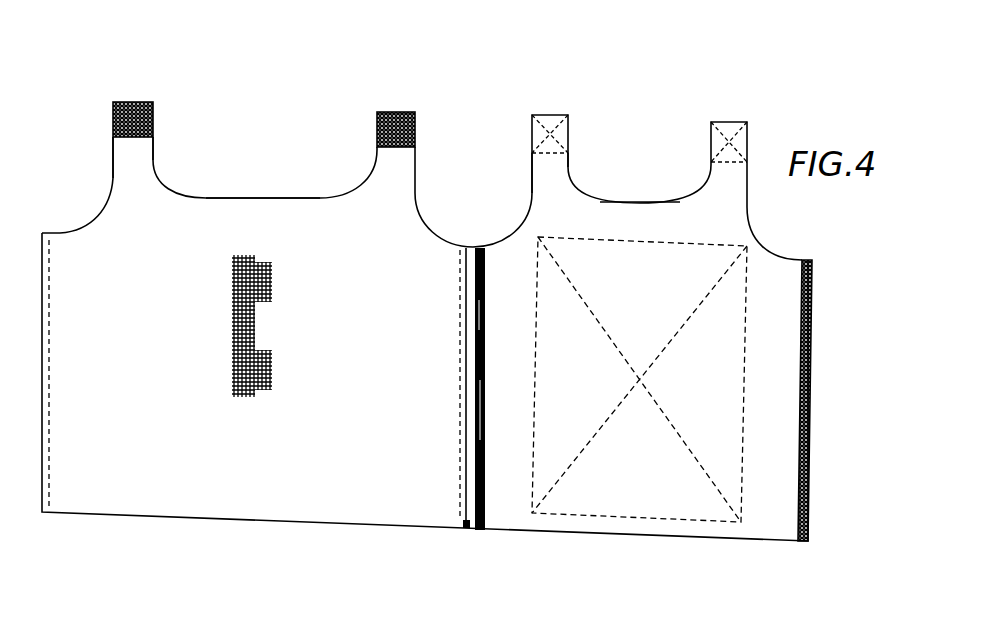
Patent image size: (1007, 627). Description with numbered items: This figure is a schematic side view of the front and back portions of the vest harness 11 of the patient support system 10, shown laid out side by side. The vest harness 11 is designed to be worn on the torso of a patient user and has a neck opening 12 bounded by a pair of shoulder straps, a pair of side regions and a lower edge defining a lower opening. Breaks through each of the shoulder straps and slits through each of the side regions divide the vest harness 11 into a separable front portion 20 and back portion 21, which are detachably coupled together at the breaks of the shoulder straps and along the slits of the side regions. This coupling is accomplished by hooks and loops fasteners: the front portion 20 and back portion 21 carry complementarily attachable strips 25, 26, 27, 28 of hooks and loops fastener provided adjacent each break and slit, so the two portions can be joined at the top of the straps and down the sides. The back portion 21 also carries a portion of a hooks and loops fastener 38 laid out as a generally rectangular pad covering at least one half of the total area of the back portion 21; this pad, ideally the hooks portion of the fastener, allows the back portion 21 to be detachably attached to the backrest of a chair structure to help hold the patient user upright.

The patient support system 10 is at (788, 105).
The vest harness 11 is at (96, 120).
The neck opening 12 is at (236, 195).
The front portion 20 is at (170, 100).
The back portion 21 is at (586, 122).
The hooks and loops fastener strip 25 is at (116, 106).
The hooks and loops fastener strip 26 is at (549, 124).
The hooks and loops fastener strip 27 is at (50, 498).
The hooks and loops fastener strip 28 is at (479, 517).
The hooks and loops fastener 38 is at (673, 522).